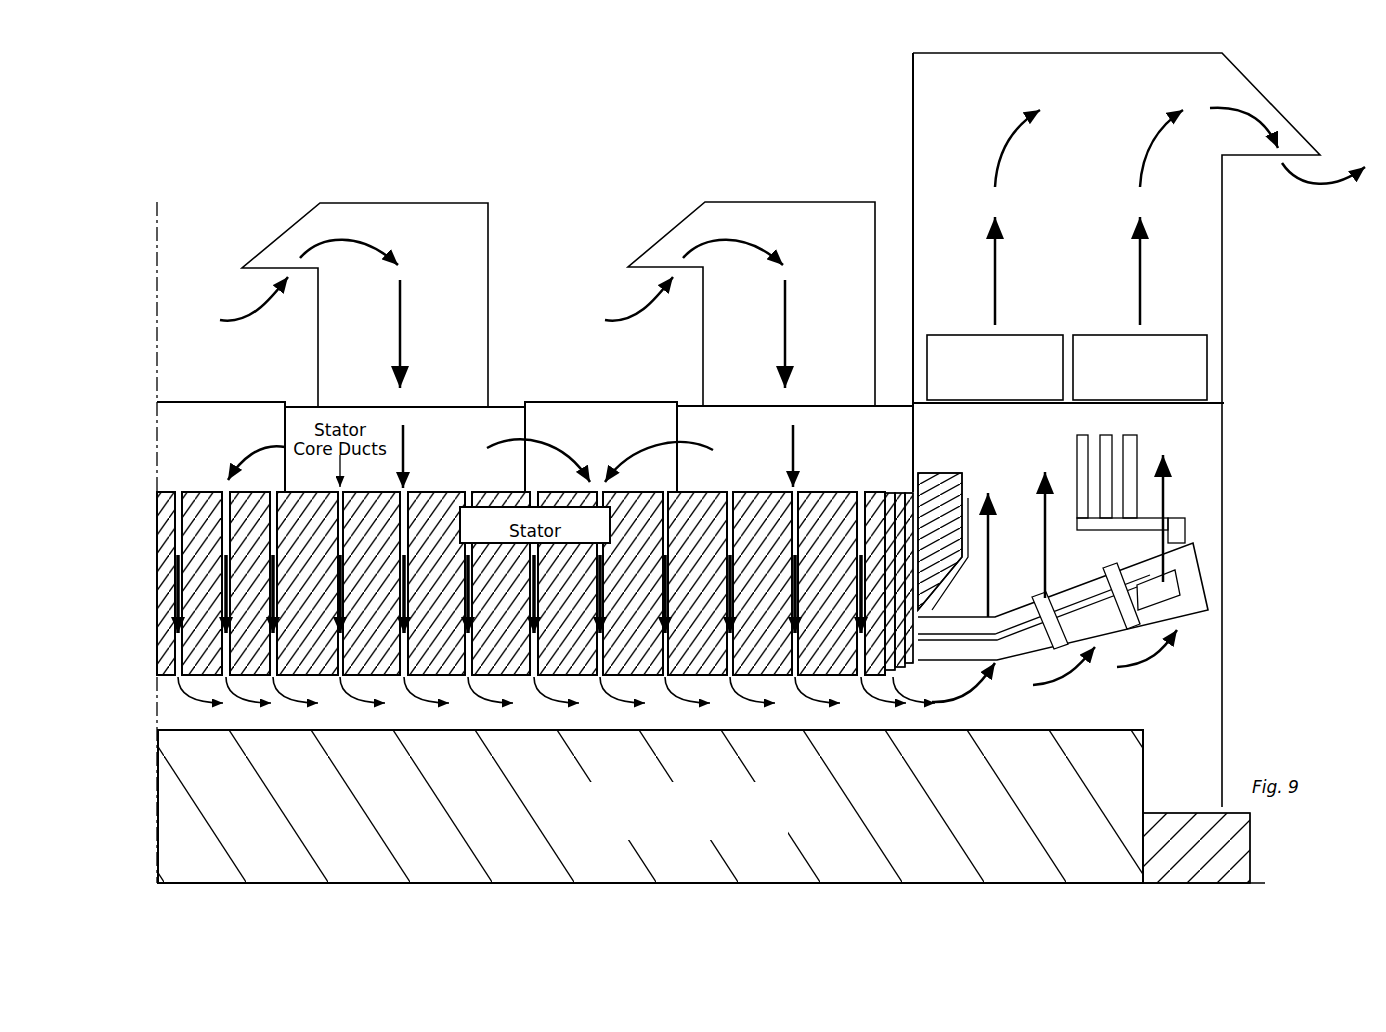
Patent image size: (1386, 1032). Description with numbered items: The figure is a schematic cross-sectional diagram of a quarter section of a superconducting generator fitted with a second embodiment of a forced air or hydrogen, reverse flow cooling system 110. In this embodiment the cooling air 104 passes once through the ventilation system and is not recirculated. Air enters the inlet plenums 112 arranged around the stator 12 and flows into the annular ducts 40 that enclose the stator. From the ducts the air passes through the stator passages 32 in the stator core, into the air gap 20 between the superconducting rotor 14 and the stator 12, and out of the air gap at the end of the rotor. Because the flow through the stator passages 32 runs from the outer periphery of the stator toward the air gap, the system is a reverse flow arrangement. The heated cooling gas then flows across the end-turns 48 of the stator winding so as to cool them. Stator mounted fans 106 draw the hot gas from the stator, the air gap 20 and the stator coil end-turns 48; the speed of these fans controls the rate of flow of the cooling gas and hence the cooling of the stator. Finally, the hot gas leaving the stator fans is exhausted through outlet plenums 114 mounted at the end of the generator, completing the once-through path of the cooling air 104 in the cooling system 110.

The stator 12 is at (166, 613).
The rotor 14 is at (681, 836).
The air gap 20 is at (176, 708).
The stator passages 32 is at (178, 523).
The annular ducts 40 is at (607, 424).
The end-turns 48 is at (1103, 628).
The cooling air 104 is at (403, 318).
The stator mounted fans 106 is at (1110, 335).
The reverse flow cooling system 110 is at (1250, 530).
The inlet plenums 112 is at (432, 203).
The outlet plenums 114 is at (1223, 262).